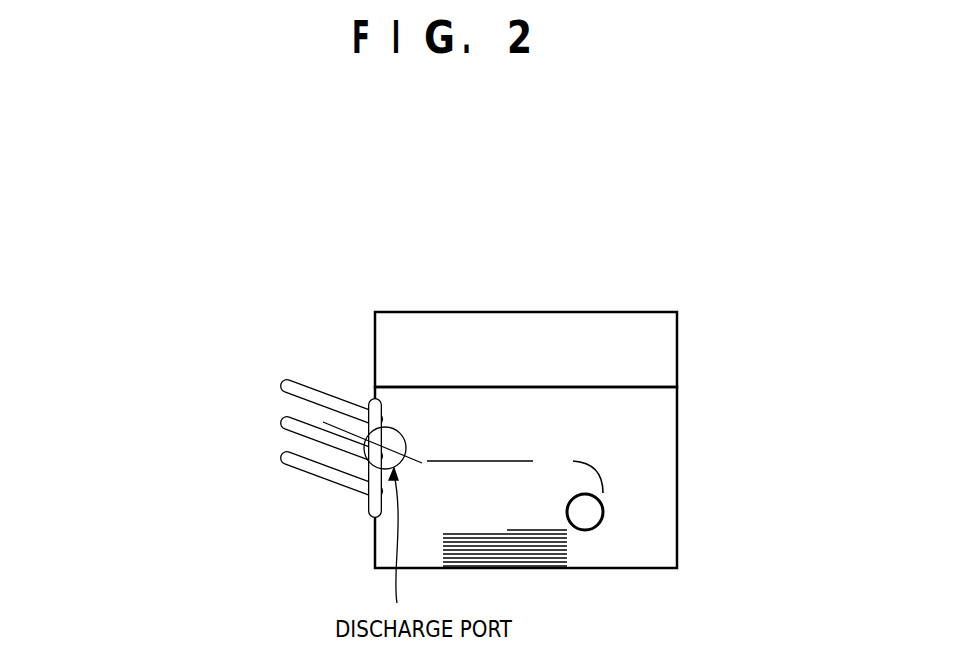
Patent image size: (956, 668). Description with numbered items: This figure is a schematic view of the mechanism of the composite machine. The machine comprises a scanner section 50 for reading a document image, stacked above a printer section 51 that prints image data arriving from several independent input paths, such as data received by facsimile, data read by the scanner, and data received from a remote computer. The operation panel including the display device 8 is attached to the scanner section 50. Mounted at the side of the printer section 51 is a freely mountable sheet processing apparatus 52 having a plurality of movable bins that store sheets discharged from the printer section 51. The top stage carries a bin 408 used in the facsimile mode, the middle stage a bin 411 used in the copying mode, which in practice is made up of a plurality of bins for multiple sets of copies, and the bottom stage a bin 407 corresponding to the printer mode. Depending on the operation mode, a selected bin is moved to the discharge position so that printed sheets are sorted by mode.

The scanner section 50 is at (673, 342).
The printer section 51 is at (673, 462).
The sheet processing apparatus 52 is at (338, 352).
The bin 408 is at (279, 378).
The bin 411 is at (278, 422).
The bin 407 is at (278, 458).
The display device 8 is at (372, 445).